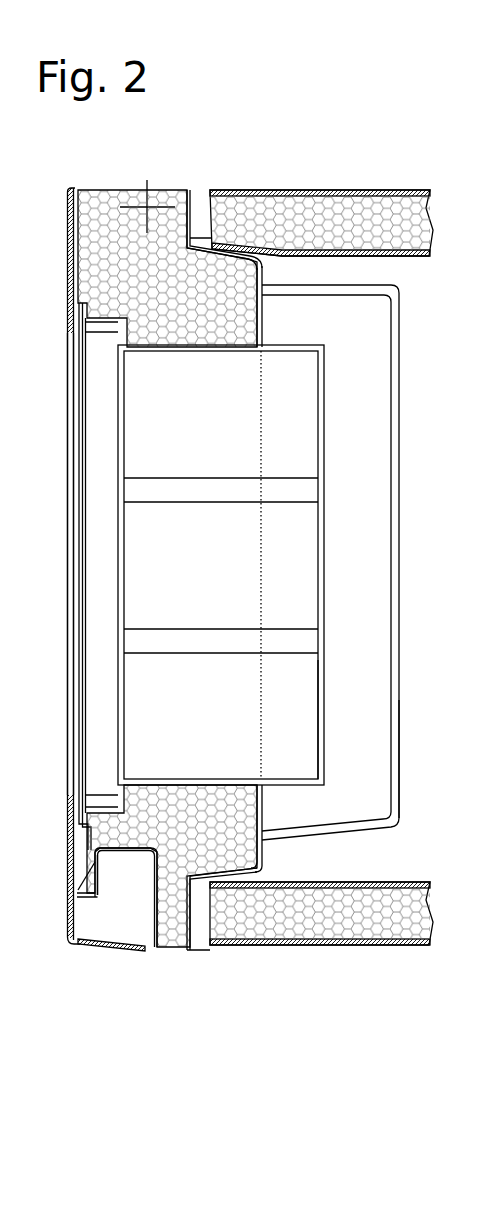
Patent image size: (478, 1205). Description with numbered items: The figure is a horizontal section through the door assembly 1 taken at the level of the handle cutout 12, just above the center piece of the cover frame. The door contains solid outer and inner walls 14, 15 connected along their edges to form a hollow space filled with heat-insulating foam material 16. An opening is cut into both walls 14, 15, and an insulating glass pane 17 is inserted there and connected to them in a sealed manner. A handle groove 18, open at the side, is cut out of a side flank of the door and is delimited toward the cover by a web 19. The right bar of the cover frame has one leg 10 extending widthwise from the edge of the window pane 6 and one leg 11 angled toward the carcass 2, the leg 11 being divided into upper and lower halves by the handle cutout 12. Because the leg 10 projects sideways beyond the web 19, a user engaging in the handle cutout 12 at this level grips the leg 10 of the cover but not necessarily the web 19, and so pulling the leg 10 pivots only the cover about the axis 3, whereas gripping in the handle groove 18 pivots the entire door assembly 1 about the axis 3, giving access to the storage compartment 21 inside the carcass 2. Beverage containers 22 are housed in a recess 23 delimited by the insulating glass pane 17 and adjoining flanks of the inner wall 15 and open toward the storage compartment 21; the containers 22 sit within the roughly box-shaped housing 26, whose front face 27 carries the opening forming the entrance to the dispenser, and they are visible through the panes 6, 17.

The door assembly 1 is at (82, 1060).
The carcass 2 is at (306, 202).
The axis 3 is at (148, 208).
The window pane 6 is at (68, 412).
The leg 10 is at (70, 878).
The leg 11 is at (82, 947).
The handle cutout 12 is at (115, 898).
The outer wall 14 is at (72, 228).
The inner wall 15 is at (262, 307).
The heat-insulating foam material 16 is at (182, 315).
The insulating glass pane 17 is at (90, 472).
The handle groove 18 is at (147, 884).
The web 19 is at (96, 860).
The storage compartment 21 is at (455, 429).
The beverage containers 22 is at (307, 660).
The recess 23 is at (216, 503).
The housing 26 is at (321, 715).
The front face 27 is at (396, 788).